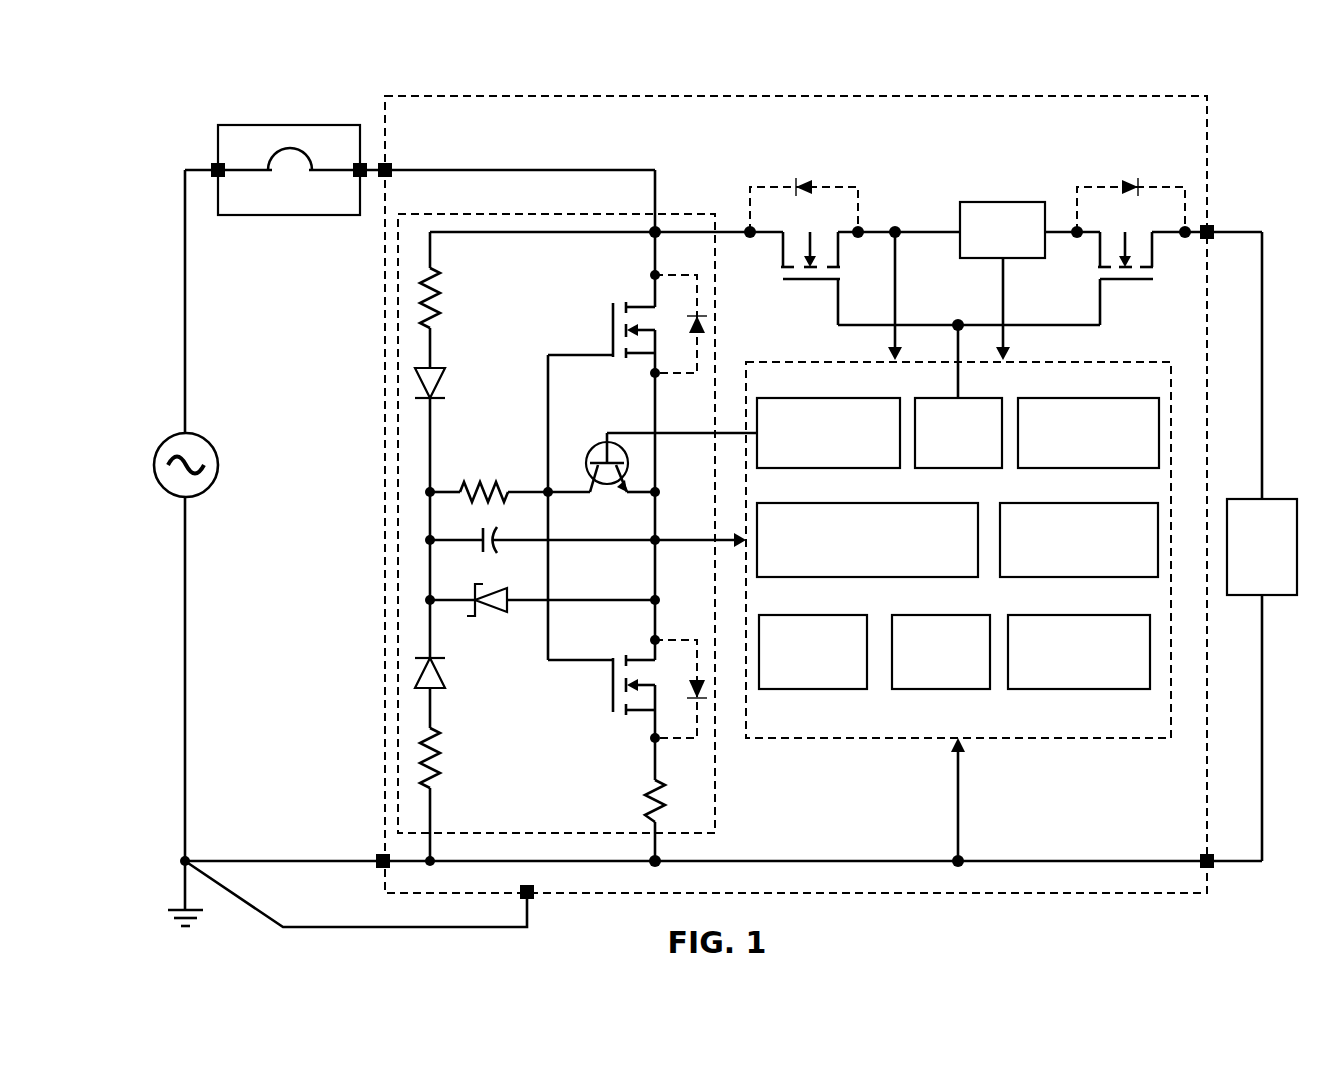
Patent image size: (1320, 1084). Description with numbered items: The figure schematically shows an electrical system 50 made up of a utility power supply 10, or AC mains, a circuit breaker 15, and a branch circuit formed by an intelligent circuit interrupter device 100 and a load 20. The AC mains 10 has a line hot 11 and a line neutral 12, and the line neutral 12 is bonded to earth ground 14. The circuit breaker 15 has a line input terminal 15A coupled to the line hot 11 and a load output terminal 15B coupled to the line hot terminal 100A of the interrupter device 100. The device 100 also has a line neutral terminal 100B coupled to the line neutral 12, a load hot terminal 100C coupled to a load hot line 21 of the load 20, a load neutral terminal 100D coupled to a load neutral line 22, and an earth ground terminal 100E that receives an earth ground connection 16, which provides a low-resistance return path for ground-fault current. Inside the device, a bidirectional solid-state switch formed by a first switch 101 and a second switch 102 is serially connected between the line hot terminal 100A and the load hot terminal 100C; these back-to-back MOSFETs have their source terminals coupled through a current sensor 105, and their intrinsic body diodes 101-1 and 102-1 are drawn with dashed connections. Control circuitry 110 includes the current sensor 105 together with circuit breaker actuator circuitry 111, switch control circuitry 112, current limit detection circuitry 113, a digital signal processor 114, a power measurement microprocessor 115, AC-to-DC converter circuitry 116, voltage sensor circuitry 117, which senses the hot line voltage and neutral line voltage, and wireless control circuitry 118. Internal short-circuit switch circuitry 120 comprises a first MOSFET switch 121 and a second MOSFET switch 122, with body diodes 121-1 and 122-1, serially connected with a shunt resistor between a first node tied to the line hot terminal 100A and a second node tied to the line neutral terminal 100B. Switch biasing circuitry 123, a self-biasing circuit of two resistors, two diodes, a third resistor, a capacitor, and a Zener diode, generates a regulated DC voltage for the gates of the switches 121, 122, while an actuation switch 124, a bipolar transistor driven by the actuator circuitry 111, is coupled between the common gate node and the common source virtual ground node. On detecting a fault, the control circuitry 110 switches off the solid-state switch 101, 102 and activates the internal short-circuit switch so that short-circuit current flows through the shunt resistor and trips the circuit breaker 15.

The utility power supply 10 is at (170, 440).
The line hot 11 is at (185, 238).
The line neutral 12 is at (185, 802).
The earth ground 14 is at (168, 910).
The circuit breaker 15 is at (292, 125).
The line input terminal 15A is at (212, 167).
The load output terminal 15B is at (355, 167).
The earth ground connection 16 is at (305, 927).
The load 20 is at (1272, 499).
The load hot line 21 is at (1255, 232).
The load neutral line 22 is at (1237, 862).
The electrical system 50 is at (715, 79).
The intelligent circuit interrupter device 100 is at (423, 96).
The line hot terminal 100A is at (392, 167).
The line neutral terminal 100B is at (378, 857).
The load hot terminal 100C is at (1214, 229).
The load neutral terminal 100D is at (1214, 857).
The earth ground terminal 100E is at (534, 892).
The first switch 101 is at (803, 293).
The body diode 101-1 is at (804, 190).
The second switch 102 is at (1137, 292).
The body diode 102-1 is at (1131, 190).
The current sensor 105 is at (1006, 202).
The control circuitry 110 is at (812, 740).
The circuit breaker actuator circuitry 111 is at (812, 398).
The switch control circuitry 112 is at (932, 398).
The current limit detection circuitry 113 is at (1065, 398).
The digital signal processor 114 is at (812, 503).
The power measurement microprocessor 115 is at (1045, 503).
The AC-to-DC converter circuitry 116 is at (803, 615).
The voltage sensor circuitry 117 is at (941, 615).
The wireless control circuitry 118 is at (1055, 615).
The internal short-circuit switch circuitry 120 is at (494, 214).
The first MOSFET switch 121 is at (603, 314).
The body diode 121-1 is at (683, 313).
The second MOSFET switch 122 is at (604, 702).
The body diode 122-1 is at (683, 679).
The switch biasing circuitry 123 is at (511, 322).
The actuation switch 124 is at (594, 445).